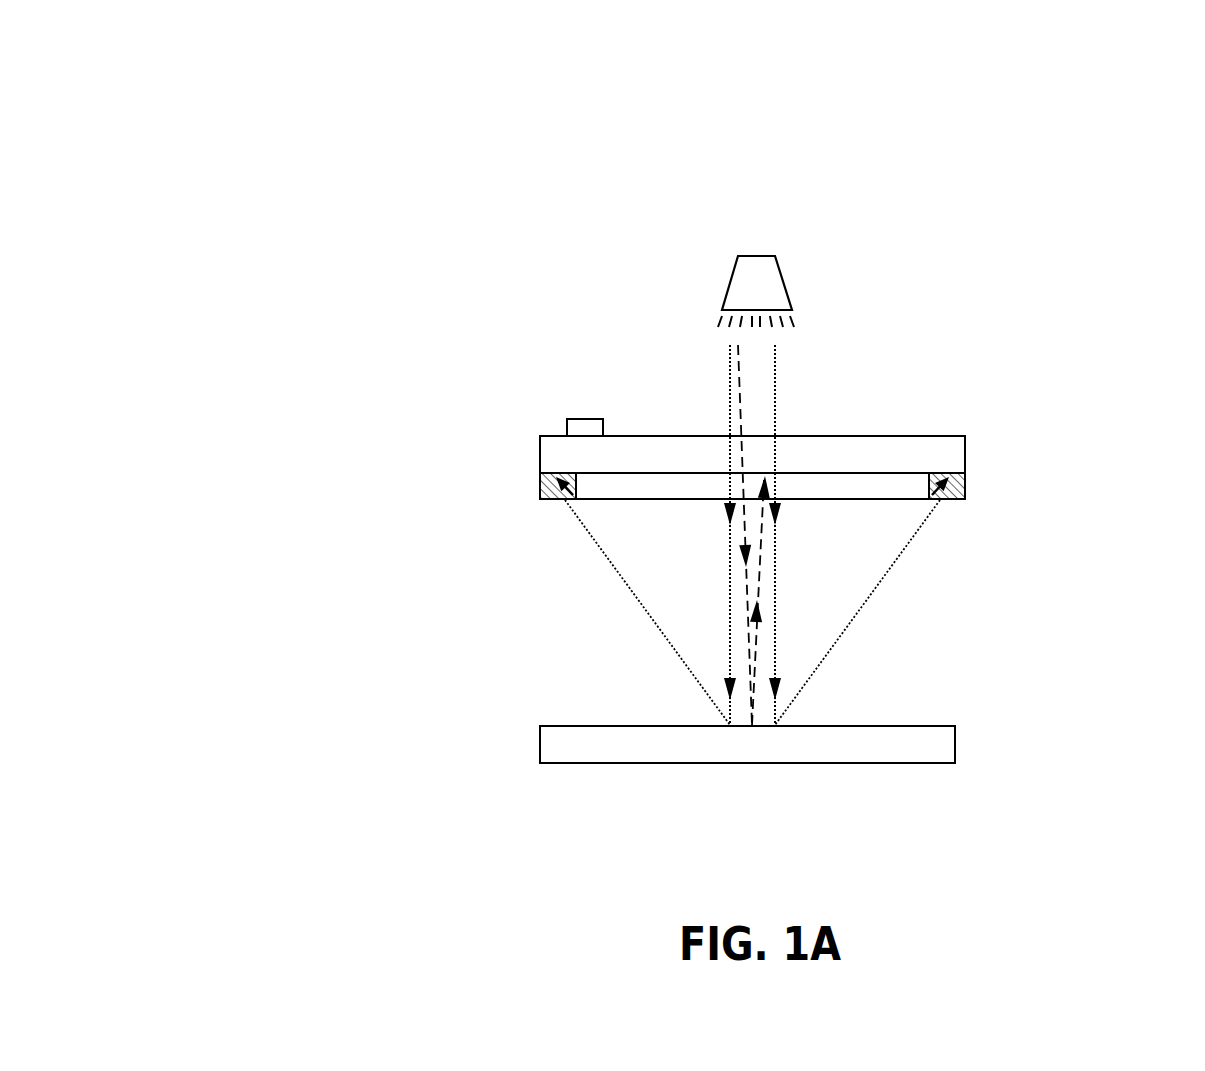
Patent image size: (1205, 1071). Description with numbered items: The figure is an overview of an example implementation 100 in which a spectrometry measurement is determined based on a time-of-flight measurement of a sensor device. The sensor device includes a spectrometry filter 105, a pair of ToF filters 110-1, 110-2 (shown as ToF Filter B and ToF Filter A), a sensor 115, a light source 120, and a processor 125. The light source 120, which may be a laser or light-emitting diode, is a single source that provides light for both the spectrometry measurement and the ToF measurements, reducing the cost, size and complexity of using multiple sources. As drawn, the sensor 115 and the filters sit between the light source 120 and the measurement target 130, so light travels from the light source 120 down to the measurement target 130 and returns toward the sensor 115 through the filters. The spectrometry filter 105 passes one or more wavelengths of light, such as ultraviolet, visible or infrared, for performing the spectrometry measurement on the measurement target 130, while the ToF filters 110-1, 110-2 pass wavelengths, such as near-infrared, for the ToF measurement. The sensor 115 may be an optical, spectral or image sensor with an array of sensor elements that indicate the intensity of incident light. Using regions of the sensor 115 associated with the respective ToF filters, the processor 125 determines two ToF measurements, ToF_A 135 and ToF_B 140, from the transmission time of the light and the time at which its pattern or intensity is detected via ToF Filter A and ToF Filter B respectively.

The example implementation 100 is at (238, 62).
The spectrometry filter 105 is at (1036, 258).
The ToF filter 110-1 is at (541, 499).
The ToF filter 110-2 is at (965, 490).
The sensor 115 is at (951, 431).
The light source 120 is at (899, 207).
The processor 125 is at (609, 377).
The measurement target 130 is at (955, 748).
The ToF measurement ToF_A 135 is at (864, 663).
The ToF measurement ToF_B 140 is at (609, 663).